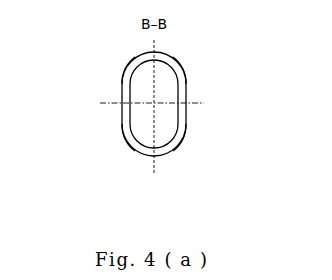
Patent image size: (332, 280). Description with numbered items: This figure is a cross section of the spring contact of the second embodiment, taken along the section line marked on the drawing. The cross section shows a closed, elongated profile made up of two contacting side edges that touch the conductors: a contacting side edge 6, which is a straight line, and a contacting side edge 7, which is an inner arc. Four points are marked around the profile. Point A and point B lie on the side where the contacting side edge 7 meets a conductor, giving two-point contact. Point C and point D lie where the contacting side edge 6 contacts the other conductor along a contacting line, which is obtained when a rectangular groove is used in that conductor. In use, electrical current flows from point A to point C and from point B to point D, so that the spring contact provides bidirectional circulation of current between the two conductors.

The contacting side edge 6 is at (122, 90).
The contacting side edge 7 is at (184, 92).
The point A is at (190, 66).
The point B is at (190, 137).
The point C is at (118, 66).
The point D is at (119, 137).